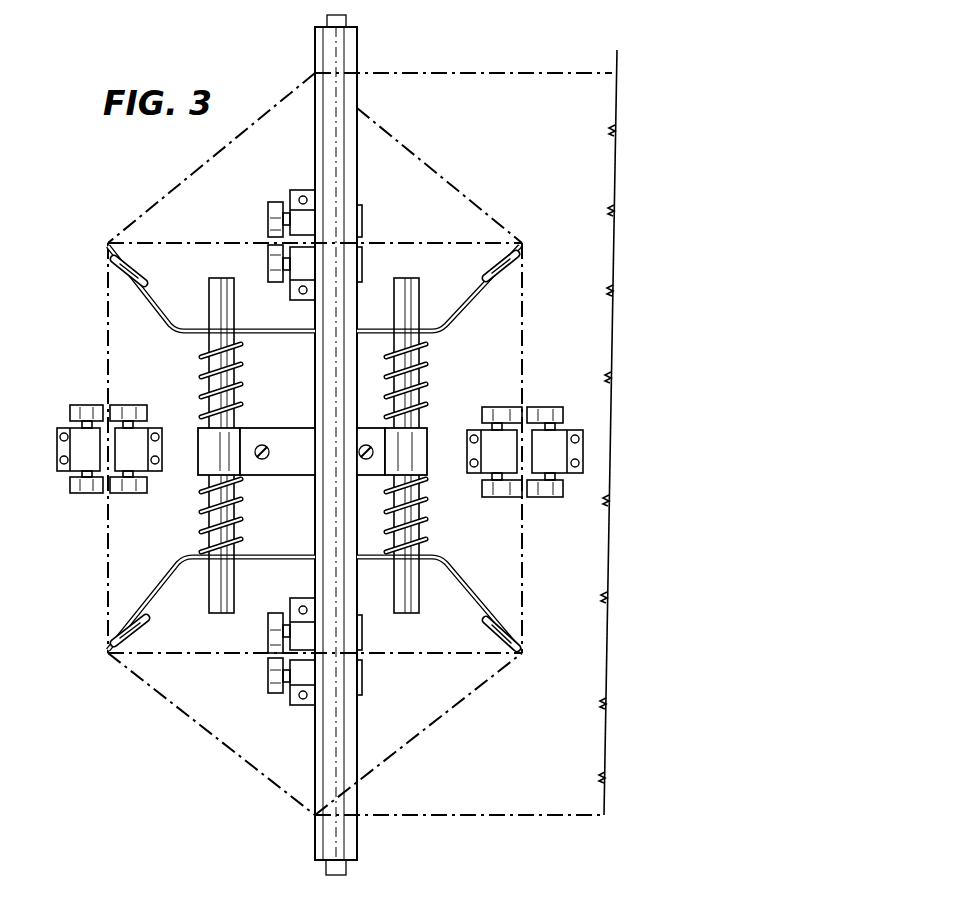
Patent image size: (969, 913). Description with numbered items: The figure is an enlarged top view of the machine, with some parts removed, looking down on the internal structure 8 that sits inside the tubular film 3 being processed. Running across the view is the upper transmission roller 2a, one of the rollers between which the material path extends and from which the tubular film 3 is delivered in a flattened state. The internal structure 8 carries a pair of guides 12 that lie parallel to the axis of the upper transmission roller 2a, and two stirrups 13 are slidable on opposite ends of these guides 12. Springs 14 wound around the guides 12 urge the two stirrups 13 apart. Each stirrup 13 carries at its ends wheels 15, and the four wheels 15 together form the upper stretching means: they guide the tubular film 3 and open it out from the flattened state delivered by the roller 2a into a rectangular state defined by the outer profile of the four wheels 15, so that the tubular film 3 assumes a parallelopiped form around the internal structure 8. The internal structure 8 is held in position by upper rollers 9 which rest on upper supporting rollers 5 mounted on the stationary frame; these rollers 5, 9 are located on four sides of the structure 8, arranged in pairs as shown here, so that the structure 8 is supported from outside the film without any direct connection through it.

The upper transmission roller 2a is at (356, 52).
The tubular film 3 is at (494, 74).
The upper supporting rollers 5 is at (274, 206).
The internal structure 8 is at (259, 426).
The upper rollers 9 is at (277, 284).
The guides 12 is at (212, 296).
The stirrups 13 is at (172, 332).
The springs 14 is at (204, 370).
The wheels 15 is at (108, 248).